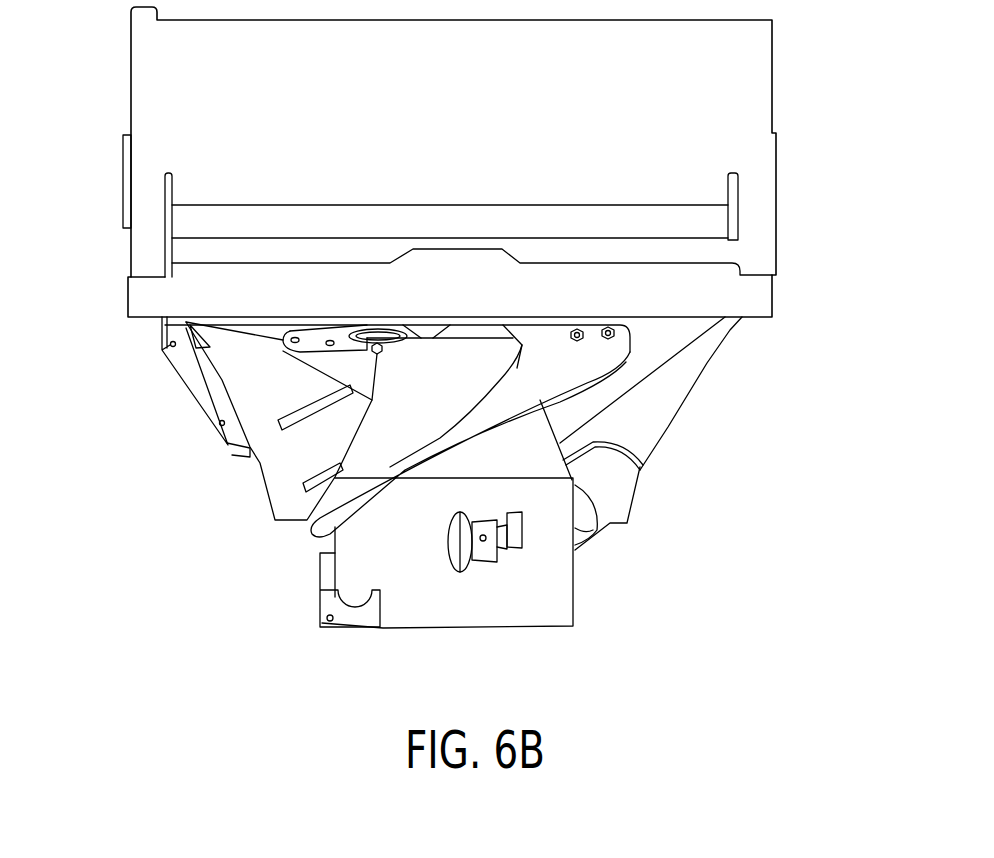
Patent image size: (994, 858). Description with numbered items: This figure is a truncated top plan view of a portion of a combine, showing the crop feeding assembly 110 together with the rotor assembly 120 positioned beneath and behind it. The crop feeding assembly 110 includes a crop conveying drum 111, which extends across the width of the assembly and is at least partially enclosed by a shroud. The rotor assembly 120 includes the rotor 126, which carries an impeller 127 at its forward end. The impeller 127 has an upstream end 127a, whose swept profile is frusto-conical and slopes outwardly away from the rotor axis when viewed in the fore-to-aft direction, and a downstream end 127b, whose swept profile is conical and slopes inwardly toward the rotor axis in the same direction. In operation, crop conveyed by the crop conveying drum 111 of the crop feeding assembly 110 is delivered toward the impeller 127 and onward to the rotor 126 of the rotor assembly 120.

The crop feeding assembly 110 is at (112, 122).
The rotor assembly 120 is at (850, 142).
The crop conveying drum 111 is at (688, 205).
The impeller 127 is at (632, 352).
The upstream end 127a is at (269, 418).
The downstream end 127b is at (560, 395).
The rotor 126 is at (510, 605).